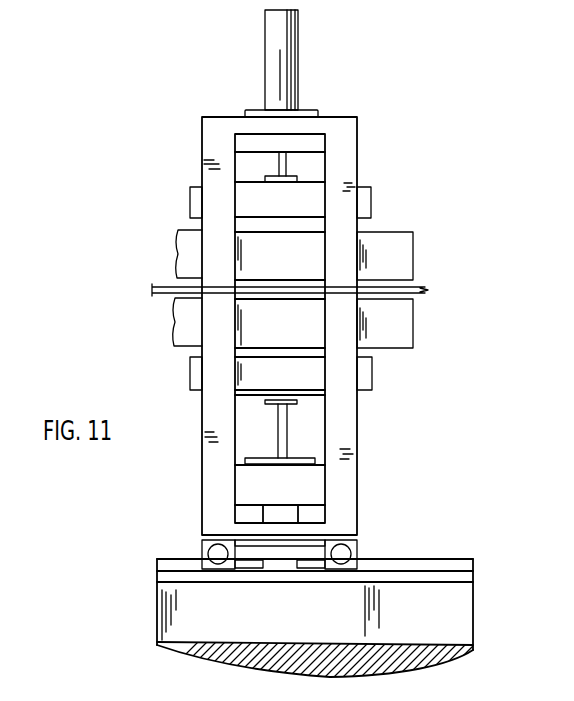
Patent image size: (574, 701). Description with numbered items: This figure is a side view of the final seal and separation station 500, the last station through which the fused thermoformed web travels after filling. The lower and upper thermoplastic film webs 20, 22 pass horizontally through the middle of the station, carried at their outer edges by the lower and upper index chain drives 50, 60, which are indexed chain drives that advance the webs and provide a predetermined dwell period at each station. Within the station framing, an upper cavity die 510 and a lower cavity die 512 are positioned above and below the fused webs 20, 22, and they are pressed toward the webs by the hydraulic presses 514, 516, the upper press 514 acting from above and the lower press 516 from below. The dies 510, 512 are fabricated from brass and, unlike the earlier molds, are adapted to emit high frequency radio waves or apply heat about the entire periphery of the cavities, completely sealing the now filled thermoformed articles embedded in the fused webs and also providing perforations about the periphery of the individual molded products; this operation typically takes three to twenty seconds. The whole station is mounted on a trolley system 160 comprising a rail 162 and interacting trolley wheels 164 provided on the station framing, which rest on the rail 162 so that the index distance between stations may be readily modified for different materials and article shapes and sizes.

The final seal and separation station 500 is at (351, 106).
The hydraulic press 514 is at (290, 73).
The upper cavity die 510 is at (372, 197).
The lower index chain drive 50 is at (395, 260).
The lower thermoplastic film web 20 is at (338, 291).
The upper thermoplastic film web 22 is at (425, 290).
The upper index chain drive 60 is at (395, 330).
The lower cavity die 512 is at (372, 377).
The hydraulic press 516 is at (287, 517).
The trolley wheels 164 is at (200, 548).
The rail 162 is at (440, 565).
The trolley system 160 is at (208, 594).